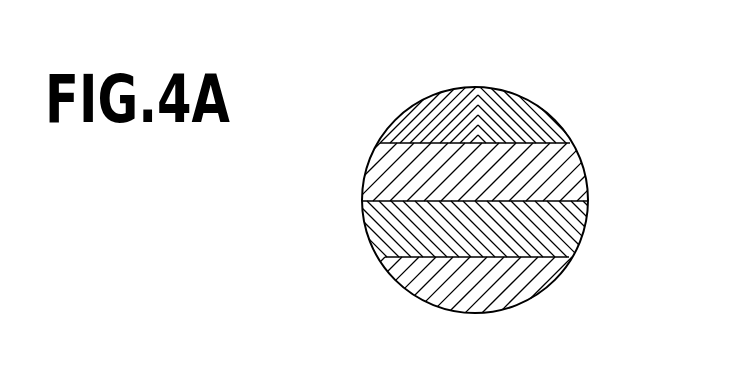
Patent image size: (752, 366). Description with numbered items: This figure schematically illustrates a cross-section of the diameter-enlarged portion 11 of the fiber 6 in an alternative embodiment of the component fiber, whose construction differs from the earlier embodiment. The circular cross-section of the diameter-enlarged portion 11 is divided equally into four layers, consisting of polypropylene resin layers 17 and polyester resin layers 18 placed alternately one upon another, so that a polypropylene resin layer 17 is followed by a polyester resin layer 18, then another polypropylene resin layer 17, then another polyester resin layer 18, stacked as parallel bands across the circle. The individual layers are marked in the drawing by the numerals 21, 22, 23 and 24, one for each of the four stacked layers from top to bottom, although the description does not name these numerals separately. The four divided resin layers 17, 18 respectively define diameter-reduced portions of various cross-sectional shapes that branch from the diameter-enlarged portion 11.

The fiber 6 is at (595, 82).
The diameter-enlarged portion 11 is at (563, 125).
The polypropylene resin layer 17 is at (480, 97).
The polyester resin layer 18 is at (570, 177).
The first layer region 21 is at (405, 118).
The second layer region 22 is at (377, 173).
The third layer region 23 is at (380, 230).
The fourth layer region 24 is at (410, 287).